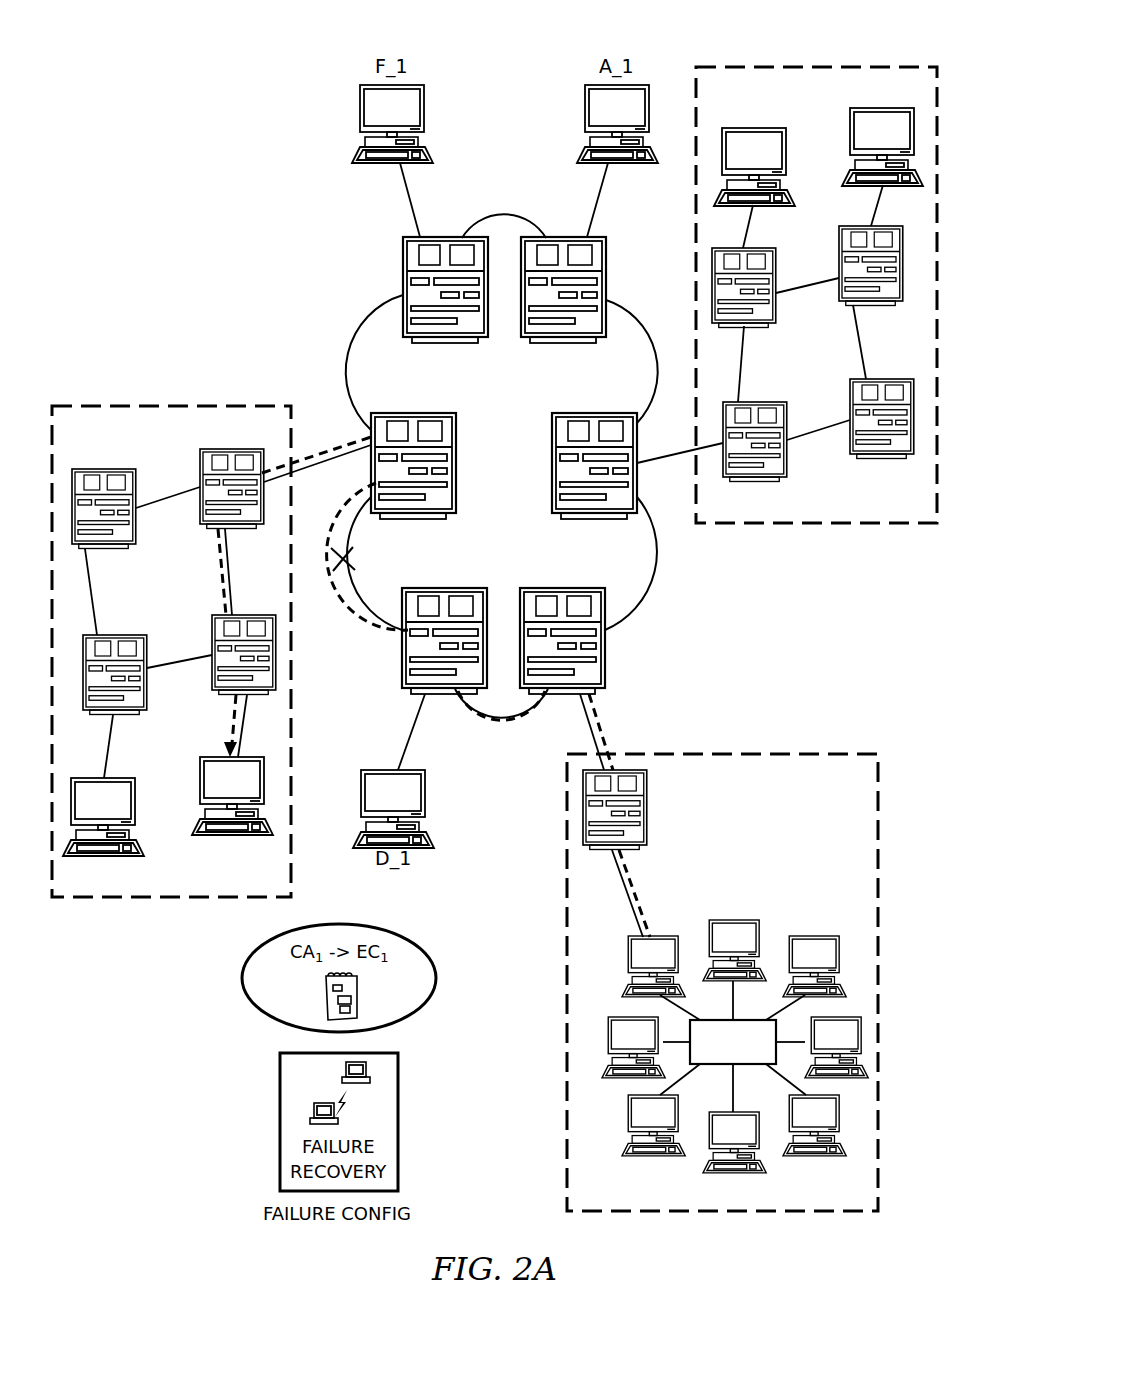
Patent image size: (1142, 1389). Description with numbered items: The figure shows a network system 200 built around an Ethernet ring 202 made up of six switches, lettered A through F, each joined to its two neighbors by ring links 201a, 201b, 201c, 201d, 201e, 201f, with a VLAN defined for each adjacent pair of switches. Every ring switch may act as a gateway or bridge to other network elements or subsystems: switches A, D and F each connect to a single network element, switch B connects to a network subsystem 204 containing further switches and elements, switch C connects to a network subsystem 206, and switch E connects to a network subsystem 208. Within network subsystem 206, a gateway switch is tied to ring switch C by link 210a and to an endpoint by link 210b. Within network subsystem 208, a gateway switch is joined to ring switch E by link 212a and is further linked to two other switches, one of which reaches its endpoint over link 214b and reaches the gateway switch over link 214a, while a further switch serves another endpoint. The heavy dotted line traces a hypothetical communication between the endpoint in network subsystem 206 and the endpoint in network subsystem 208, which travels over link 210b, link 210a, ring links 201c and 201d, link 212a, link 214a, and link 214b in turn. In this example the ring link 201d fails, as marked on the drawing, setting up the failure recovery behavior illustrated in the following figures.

The network system 200 is at (179, 181).
The Ethernet ring 202 is at (379, 243).
The link 201a is at (656, 290).
The link 201b is at (609, 630).
The link 201c is at (505, 723).
The link 201d is at (383, 630).
The link 201e is at (400, 303).
The link 201f is at (498, 213).
The network subsystem 204 is at (859, 64).
The network subsystem 206 is at (797, 1215).
The network subsystem 208 is at (128, 901).
The link 210a is at (604, 745).
The link 210b is at (640, 892).
The link 212a is at (347, 460).
The link 214a is at (220, 572).
The link 214b is at (232, 718).